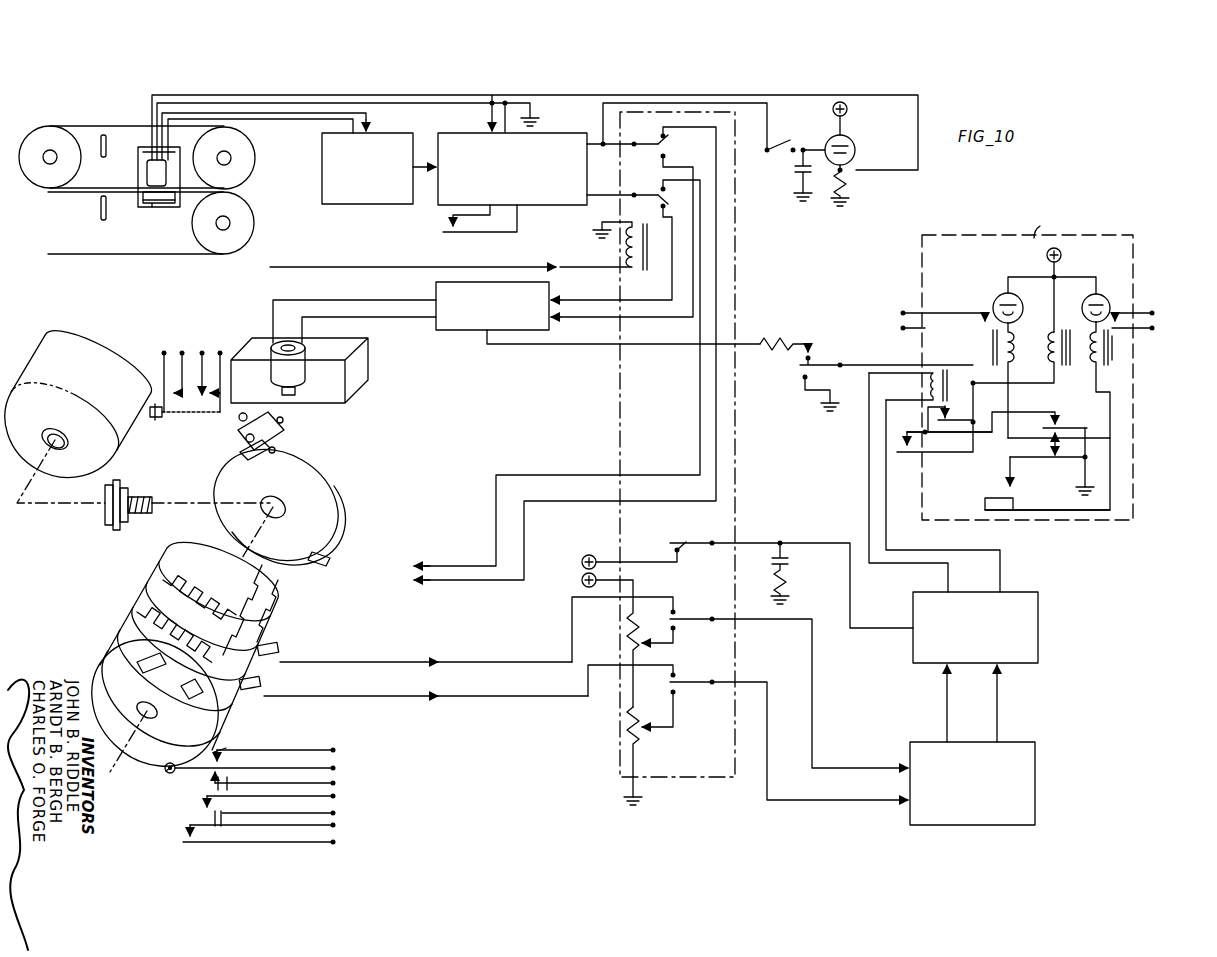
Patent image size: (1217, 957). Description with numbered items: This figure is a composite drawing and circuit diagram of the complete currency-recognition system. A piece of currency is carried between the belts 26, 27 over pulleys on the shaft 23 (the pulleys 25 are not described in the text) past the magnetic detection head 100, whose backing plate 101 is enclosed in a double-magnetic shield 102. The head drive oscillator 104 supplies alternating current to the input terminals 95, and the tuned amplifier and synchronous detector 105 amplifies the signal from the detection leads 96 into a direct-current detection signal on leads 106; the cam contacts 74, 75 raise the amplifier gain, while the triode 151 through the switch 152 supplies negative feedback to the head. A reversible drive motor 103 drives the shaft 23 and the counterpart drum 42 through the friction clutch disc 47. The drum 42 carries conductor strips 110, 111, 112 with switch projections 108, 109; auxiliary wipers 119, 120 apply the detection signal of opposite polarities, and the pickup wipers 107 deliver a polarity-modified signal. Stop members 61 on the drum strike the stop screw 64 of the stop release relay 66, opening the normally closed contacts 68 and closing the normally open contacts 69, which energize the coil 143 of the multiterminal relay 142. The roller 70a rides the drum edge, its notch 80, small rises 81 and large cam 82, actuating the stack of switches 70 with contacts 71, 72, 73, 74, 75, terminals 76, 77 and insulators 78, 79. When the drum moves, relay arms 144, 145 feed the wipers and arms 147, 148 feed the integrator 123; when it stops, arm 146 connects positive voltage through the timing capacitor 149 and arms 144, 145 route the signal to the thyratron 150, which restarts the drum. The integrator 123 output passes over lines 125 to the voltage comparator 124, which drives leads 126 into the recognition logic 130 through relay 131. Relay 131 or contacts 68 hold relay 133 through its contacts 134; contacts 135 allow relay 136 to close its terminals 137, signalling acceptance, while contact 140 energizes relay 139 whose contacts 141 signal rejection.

The shaft 23 is at (230, 222).
The pulleys 25 is at (246, 158).
The belt 26 is at (82, 258).
The belt 27 is at (91, 132).
The magnetic detection head 100 is at (150, 162).
The backing plate 101 is at (163, 210).
The double-magnetic shield 102 is at (168, 148).
The input terminals 95 is at (250, 113).
The detection leads 96 is at (378, 97).
The head drive oscillator 104 is at (334, 205).
The tuned amplifier and synchronous detector 105 is at (437, 197).
The switch contact 74 is at (452, 223).
The switch contact 75 is at (462, 234).
The detection signal leads 106 is at (612, 150).
The relay arm 144 is at (668, 145).
The relay arm 145 is at (663, 198).
The energizing coil 143 is at (636, 270).
The thyratron 150 is at (442, 331).
The switch 152 is at (781, 142).
The triode 151 is at (856, 150).
The recognition logic 130 is at (984, 236).
The relay 139 is at (1000, 328).
The relay 133 is at (1070, 332).
The relay 136 is at (1114, 345).
The normally open contacts 141 is at (956, 312).
The switch terminals 137 is at (1138, 316).
The contacts 134 is at (1056, 422).
The contact 140 is at (1100, 437).
The contacts 135 is at (1092, 453).
The switch terminal 77 is at (1015, 468).
The switch terminal 76 is at (982, 498).
The normally closed switch contacts 68 is at (906, 436).
The normally open contacts 69 is at (202, 350).
The switch contact 73 is at (811, 357).
The switch contact 72 is at (800, 378).
The switch contact 71 is at (816, 412).
The relay 131 is at (932, 375).
The leads 126 is at (869, 520).
The multiterminal relay 142 is at (618, 439).
The switch arm 146 is at (682, 544).
The relay arm 147 is at (682, 620).
The relay arm 148 is at (682, 682).
The timing capacitor 149 is at (790, 560).
The voltage comparator 124 is at (1026, 640).
The lines 125 is at (996, 681).
The integrator 123 is at (956, 826).
The reversible drive motor 103 is at (88, 358).
The disc 47 is at (118, 484).
The stop screw 64 is at (168, 418).
The stop release relay 66 is at (296, 380).
The stop member 61 is at (284, 446).
The conductor strip 110 is at (178, 571).
The switch projection 108 is at (160, 562).
The large cam 82 is at (128, 618).
The conductor strip 111 is at (136, 584).
The switch projection 109 is at (186, 612).
The auxiliary switch wiper 119 is at (260, 590).
The auxiliary wiper 120 is at (218, 632).
The switch wiper 107 is at (280, 648).
The notch 80 is at (166, 664).
The small area with rise 81 is at (200, 712).
The conductor strip 112 is at (232, 702).
The rotatable drum 42 is at (146, 746).
The cam-actuated stack of switches 70 is at (320, 744).
The roller 70a is at (174, 774).
The insulator 78 is at (216, 787).
The insulator 79 is at (222, 824).